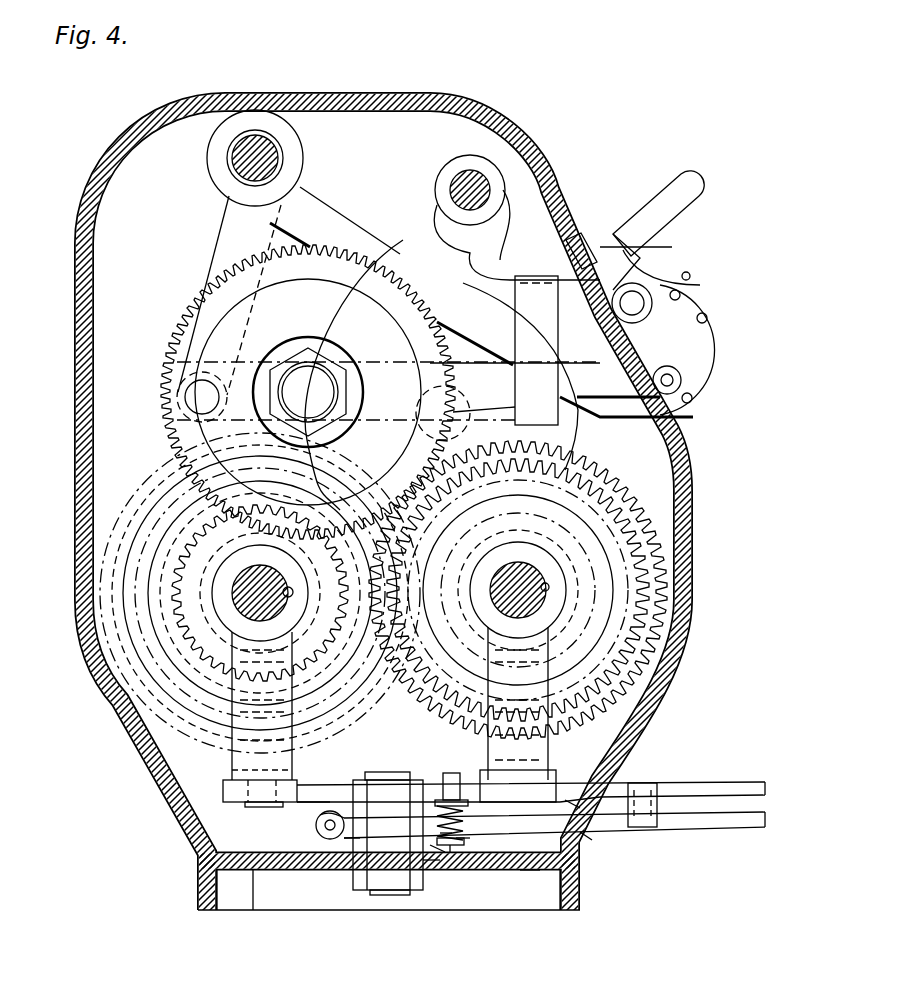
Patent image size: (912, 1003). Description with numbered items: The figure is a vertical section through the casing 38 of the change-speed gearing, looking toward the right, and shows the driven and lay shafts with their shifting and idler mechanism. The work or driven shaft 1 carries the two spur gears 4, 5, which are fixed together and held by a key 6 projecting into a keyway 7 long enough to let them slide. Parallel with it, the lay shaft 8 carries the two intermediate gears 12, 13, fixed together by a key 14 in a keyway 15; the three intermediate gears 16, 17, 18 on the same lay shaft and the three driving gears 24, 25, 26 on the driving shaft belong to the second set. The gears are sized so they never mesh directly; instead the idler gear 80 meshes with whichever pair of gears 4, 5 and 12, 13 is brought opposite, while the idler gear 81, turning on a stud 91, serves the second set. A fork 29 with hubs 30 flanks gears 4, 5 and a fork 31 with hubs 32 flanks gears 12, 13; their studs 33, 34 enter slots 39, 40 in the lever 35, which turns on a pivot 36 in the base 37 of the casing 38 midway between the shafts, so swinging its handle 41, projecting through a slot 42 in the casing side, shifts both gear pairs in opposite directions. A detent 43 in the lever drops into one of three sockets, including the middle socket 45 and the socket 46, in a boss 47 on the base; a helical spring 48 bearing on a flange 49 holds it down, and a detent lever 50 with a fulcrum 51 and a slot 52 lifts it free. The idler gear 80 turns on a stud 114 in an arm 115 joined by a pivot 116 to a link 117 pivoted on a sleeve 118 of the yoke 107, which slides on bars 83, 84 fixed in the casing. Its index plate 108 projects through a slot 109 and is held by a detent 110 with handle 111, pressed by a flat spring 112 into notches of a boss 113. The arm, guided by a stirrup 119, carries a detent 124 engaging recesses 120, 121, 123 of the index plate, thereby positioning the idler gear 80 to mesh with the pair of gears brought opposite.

The work or driven shaft 1 is at (548, 590).
The spur gear 4 is at (557, 580).
The spur gear 5 is at (623, 502).
The key 6 is at (550, 589).
The keyway 7 is at (593, 570).
The lay shaft 8 is at (190, 637).
The intermediate gear 12 is at (240, 613).
The intermediate gear 13 is at (177, 600).
The key 14 is at (300, 610).
The keyway 15 is at (290, 600).
The intermediate gear 16 is at (190, 657).
The intermediate gear 17 is at (183, 740).
The intermediate gear 18 is at (177, 640).
The driving gear 24 is at (600, 540).
The driving gear 25 is at (628, 573).
The driving gear 26 is at (553, 585).
The fork 29 is at (540, 697).
The hubs 30 is at (553, 610).
The fork 31 is at (242, 785).
The hubs 32 is at (217, 587).
The stud 33 is at (572, 805).
The stud 34 is at (223, 810).
The lever 35 is at (303, 803).
The pivot 36 is at (385, 895).
The base 37 is at (420, 877).
The casing 38 is at (507, 203).
The slot 39 is at (560, 783).
The slot 40 is at (247, 793).
The handle 41 is at (707, 787).
The slot 42 is at (585, 837).
The detent 43 is at (450, 773).
The socket 45 is at (440, 850).
The socket 46 is at (447, 834).
The boss 47 is at (462, 839).
The helical spring 48 is at (462, 800).
The flange 49 is at (467, 818).
The detent lever 50 is at (332, 838).
The fulcrum 51 is at (345, 838).
The slot 52 is at (530, 875).
The idler gear 80 is at (213, 293).
The idler gear 81 is at (420, 277).
The bar 83 is at (250, 160).
The bar 84 is at (478, 180).
The stud 91 is at (463, 400).
The yoke 107 is at (470, 253).
The index plate 108 is at (717, 350).
The slot 109 is at (680, 420).
The detent 110 is at (650, 246).
The handle 111 is at (693, 193).
The flat spring 112 is at (690, 277).
The boss 113 is at (585, 245).
The stud 114 is at (293, 373).
The arm 115 is at (380, 407).
The pivot 116 is at (180, 400).
The link 117 is at (210, 243).
The sleeve 118 is at (282, 154).
The stirrup 119 is at (547, 413).
The recess 120 is at (693, 398).
The recess 121 is at (708, 318).
The recess 123 is at (681, 295).
The detent 124 is at (667, 366).